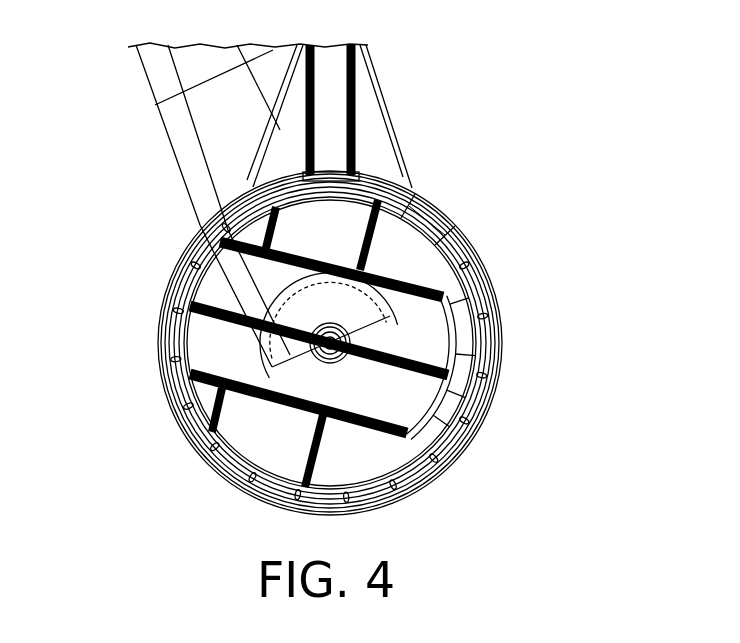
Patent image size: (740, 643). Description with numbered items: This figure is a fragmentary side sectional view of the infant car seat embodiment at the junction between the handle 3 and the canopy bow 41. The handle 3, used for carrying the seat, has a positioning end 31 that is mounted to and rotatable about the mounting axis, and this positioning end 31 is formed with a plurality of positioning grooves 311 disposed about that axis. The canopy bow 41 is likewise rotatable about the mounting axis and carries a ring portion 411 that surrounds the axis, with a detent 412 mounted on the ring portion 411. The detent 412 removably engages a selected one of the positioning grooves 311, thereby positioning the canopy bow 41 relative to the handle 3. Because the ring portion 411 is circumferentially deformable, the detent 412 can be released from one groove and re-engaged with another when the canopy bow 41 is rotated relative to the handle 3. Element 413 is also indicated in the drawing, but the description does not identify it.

The handle 3 is at (188, 203).
The positioning end 31 is at (372, 458).
The positioning groove 311 is at (470, 414).
The canopy bow 41 is at (405, 130).
The ring portion 411 is at (476, 262).
The detent 412 is at (491, 335).
The mounting block 413 is at (437, 222).